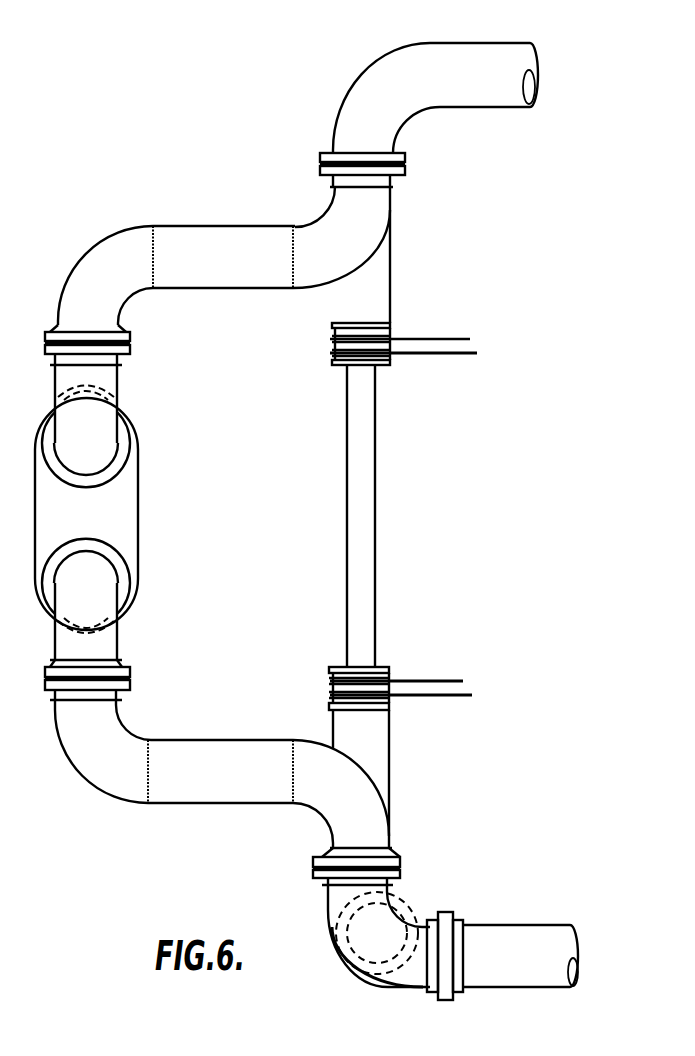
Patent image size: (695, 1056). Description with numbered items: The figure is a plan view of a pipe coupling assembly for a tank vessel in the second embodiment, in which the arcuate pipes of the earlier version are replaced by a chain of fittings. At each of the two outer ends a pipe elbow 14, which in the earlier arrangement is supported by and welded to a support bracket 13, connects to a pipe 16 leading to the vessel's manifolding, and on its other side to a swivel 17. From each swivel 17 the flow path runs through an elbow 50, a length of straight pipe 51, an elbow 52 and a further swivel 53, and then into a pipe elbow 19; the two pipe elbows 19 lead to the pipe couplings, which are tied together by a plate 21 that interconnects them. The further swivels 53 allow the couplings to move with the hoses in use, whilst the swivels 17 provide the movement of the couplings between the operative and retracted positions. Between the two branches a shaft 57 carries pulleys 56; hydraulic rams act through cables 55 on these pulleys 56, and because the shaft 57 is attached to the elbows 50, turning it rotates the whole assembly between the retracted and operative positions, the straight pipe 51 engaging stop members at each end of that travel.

The support bracket 13 is at (403, 128).
The pipe elbow 14 is at (328, 912).
The pipe 16 is at (491, 925).
The swivel 17 is at (407, 165).
The pipe elbow 19 is at (102, 438).
The plate 21 is at (95, 524).
The elbow 50 is at (340, 266).
The length of straight pipe 51 is at (224, 272).
The elbow 52 is at (113, 301).
The further swivel 53 is at (130, 343).
The cable 55 is at (413, 339).
The pulley 56 is at (335, 344).
The shaft 57 is at (347, 506).